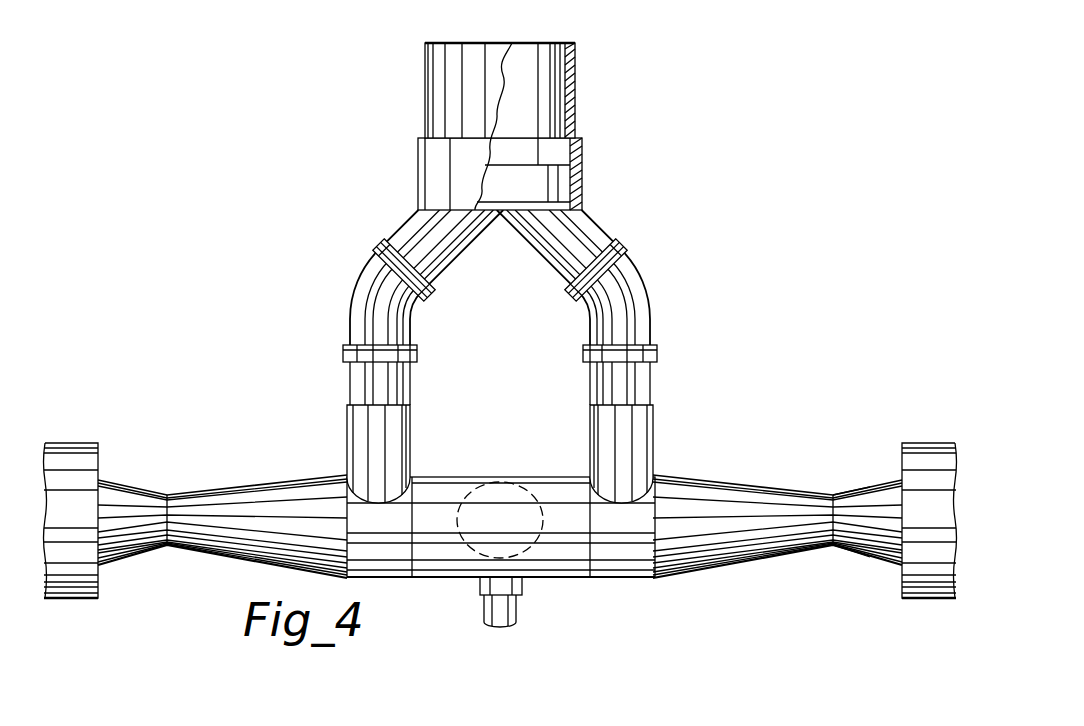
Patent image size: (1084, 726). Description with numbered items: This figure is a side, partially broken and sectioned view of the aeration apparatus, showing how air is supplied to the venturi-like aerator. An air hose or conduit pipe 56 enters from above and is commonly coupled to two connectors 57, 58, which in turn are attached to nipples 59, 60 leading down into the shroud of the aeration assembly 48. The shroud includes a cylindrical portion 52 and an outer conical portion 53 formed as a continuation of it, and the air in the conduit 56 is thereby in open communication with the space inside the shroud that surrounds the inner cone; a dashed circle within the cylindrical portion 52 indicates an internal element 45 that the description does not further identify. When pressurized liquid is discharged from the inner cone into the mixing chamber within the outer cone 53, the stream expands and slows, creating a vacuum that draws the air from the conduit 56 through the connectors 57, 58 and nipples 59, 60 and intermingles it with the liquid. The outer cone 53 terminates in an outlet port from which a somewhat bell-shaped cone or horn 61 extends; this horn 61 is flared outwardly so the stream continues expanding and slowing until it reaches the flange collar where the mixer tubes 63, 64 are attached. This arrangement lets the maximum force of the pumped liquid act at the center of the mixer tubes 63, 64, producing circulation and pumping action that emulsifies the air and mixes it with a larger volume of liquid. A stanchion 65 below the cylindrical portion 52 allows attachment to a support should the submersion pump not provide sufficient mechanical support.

The ball valve member 45 is at (493, 482).
The aeration assembly 48 is at (218, 422).
The cylindrical portion 52 is at (628, 580).
The outer conical portion 53 is at (760, 565).
The conduit 56 is at (574, 99).
The connector 57 is at (357, 292).
The connector 58 is at (640, 290).
The nipple 59 is at (350, 382).
The nipple 60 is at (650, 385).
The bell-shaped cone 61 is at (867, 493).
The mixer tube 63 is at (78, 443).
The mixer tube 64 is at (920, 438).
The stanchion 65 is at (520, 610).